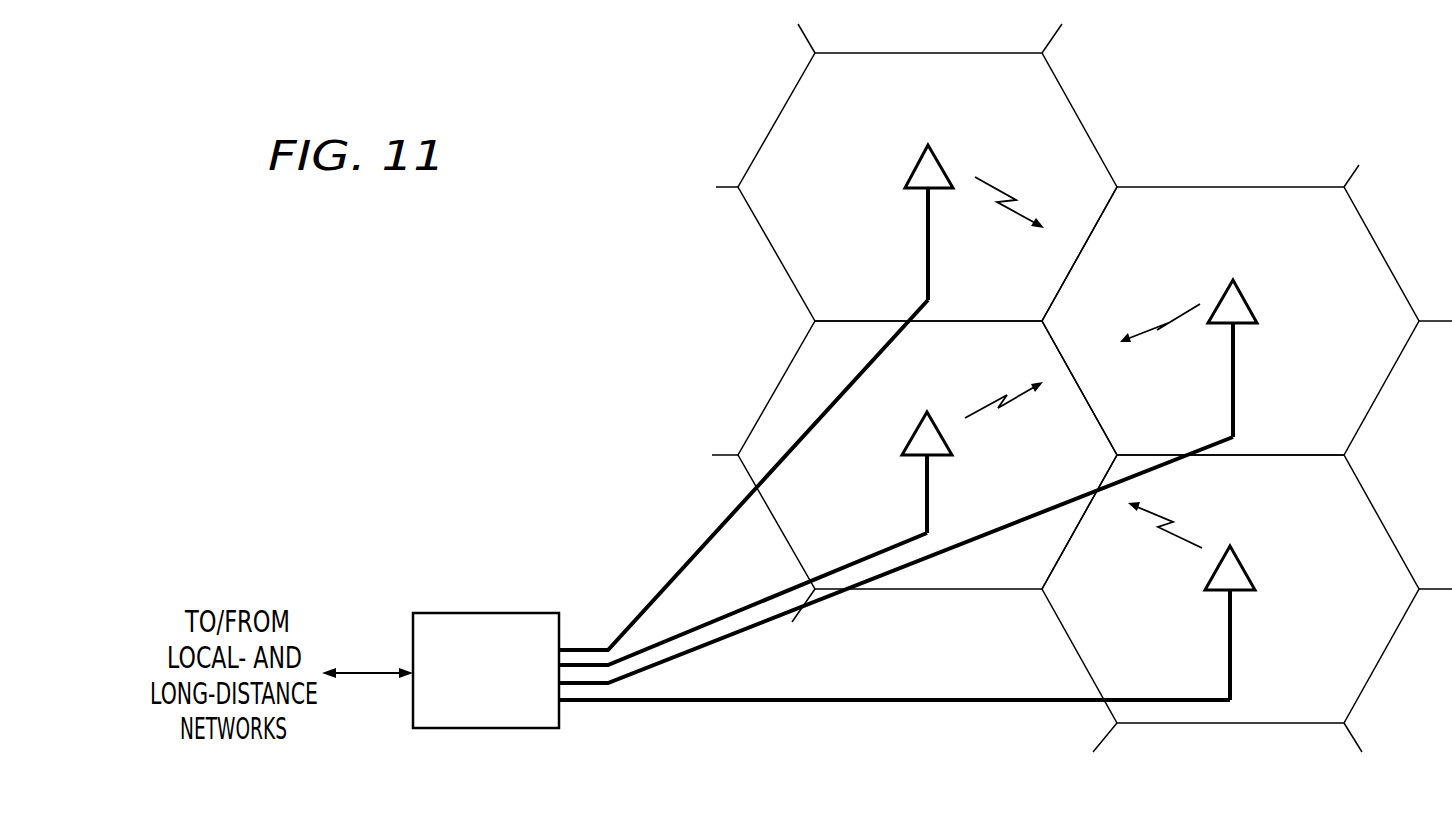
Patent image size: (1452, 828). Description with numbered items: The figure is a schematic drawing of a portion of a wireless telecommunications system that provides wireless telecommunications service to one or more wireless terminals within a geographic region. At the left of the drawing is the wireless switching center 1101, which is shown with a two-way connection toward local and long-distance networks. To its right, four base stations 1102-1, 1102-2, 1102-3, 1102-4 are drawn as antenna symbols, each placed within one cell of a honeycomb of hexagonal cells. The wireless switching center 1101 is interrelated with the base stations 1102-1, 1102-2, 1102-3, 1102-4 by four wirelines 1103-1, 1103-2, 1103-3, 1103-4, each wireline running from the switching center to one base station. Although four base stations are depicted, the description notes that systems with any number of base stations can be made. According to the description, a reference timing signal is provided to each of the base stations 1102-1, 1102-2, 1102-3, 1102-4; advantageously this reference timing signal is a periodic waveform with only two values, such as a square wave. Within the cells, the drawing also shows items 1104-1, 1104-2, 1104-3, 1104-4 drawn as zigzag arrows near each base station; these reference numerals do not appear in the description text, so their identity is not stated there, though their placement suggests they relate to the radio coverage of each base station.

The wireless switching center 1101 is at (455, 613).
The base station 1102-1 is at (928, 225).
The base station 1102-2 is at (927, 484).
The base station 1102-3 is at (1233, 366).
The base station 1102-4 is at (1230, 641).
The wireline 1103-1 is at (678, 572).
The wireline 1103-2 is at (760, 600).
The wireline 1103-3 is at (785, 655).
The wireline 1103-4 is at (872, 702).
The wireless link 1104-1 is at (1003, 194).
The wireless link 1104-2 is at (1011, 407).
The wireless link 1104-3 is at (1188, 307).
The wireless link 1104-4 is at (1173, 537).